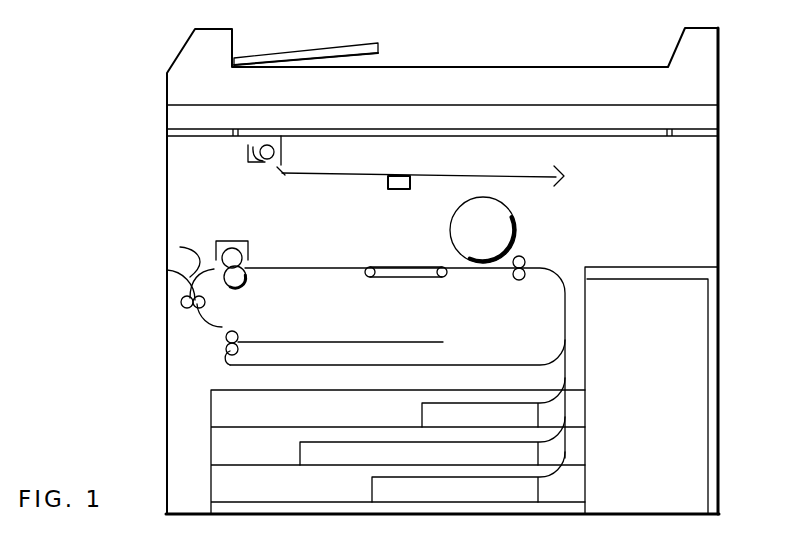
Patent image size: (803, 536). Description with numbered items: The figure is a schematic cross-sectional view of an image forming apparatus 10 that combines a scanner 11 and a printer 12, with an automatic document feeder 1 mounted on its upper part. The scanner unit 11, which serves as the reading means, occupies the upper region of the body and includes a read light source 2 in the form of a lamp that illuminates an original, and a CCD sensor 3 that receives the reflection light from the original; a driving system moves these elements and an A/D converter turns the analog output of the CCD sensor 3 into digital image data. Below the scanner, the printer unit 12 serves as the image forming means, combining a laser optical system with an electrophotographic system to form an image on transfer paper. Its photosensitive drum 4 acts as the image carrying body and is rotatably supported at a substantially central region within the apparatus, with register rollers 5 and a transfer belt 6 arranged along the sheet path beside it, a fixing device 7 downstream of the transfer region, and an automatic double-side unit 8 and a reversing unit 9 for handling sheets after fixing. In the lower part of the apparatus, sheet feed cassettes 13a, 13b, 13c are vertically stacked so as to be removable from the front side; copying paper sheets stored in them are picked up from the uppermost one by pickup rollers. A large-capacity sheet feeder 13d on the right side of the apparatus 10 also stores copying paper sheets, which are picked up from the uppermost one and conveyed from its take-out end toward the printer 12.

The automatic document feeder 1 is at (306, 38).
The read light source 2 is at (241, 165).
The CCD sensor 3 is at (375, 199).
The photosensitive drum 4 is at (506, 230).
The register rollers 5 is at (545, 255).
The transfer belt 6 is at (381, 290).
The fixing device 7 is at (250, 246).
The automatic double-side unit 8 is at (334, 337).
The reversing unit 9 is at (179, 296).
The image forming apparatus 10 is at (476, 271).
The scanner unit 11 is at (456, 164).
The printer unit 12 is at (651, 364).
The sheet feed cassette 13a is at (422, 414).
The sheet feed cassette 13b is at (300, 452).
The sheet feed cassette 13c is at (372, 489).
The large-capacity sheet feeder 13d is at (700, 360).